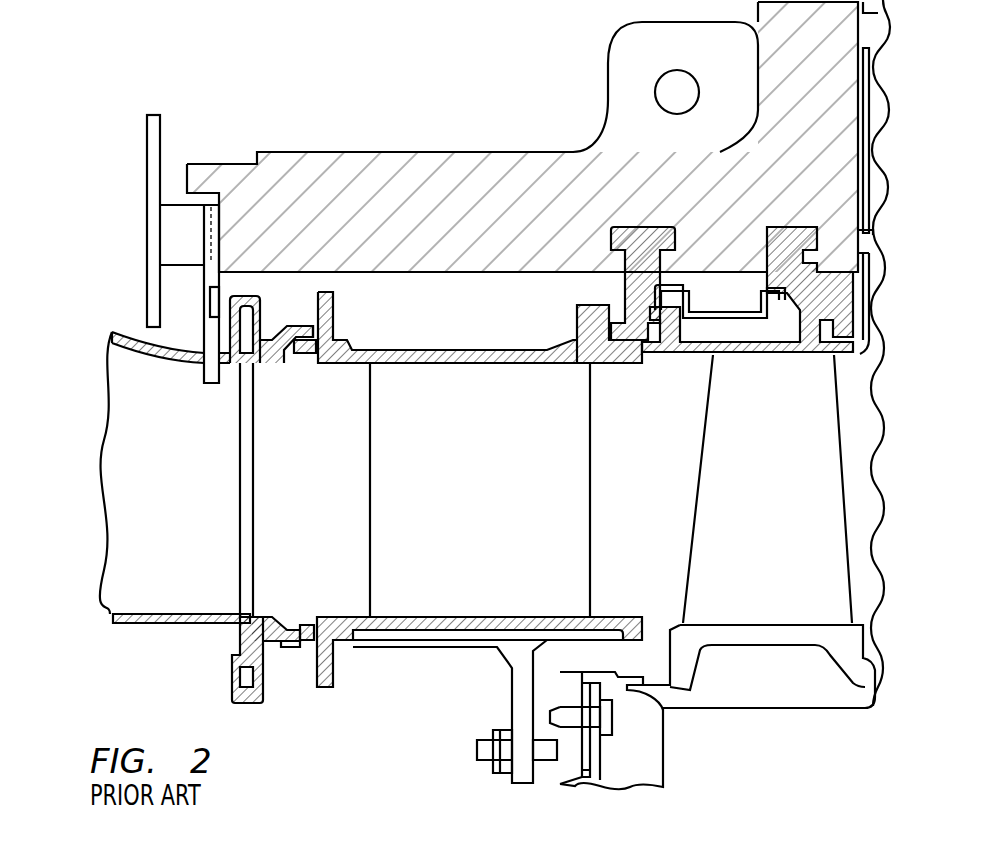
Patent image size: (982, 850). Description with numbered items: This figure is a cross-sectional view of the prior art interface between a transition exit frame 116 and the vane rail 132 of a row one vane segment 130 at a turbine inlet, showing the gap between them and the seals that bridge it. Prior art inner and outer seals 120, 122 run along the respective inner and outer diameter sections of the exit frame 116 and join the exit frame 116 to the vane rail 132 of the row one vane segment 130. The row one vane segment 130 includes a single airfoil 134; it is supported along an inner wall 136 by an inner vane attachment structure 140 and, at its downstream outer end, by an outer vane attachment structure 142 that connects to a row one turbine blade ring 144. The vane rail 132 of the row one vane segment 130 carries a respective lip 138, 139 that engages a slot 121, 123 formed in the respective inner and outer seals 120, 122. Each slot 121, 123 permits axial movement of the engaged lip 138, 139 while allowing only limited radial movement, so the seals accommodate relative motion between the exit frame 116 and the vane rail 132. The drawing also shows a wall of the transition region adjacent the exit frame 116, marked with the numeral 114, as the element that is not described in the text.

The combustor liner 114 is at (180, 502).
The transition exit frame 116 is at (112, 332).
The inner seal 120 is at (272, 620).
The slot 121 is at (300, 638).
The outer seal 122 is at (273, 358).
The slot 123 is at (298, 352).
The row 1 vane segment 130 is at (593, 345).
The vane rail 132 is at (332, 366).
The airfoil 134 is at (485, 502).
The inner wall 136 is at (523, 647).
The lip 138 is at (305, 622).
The lip 139 is at (303, 355).
The inner vane attachment structure 140 is at (500, 773).
The outer vane attachment structure 142 is at (645, 253).
The row 1 turbine blade ring 144 is at (493, 228).